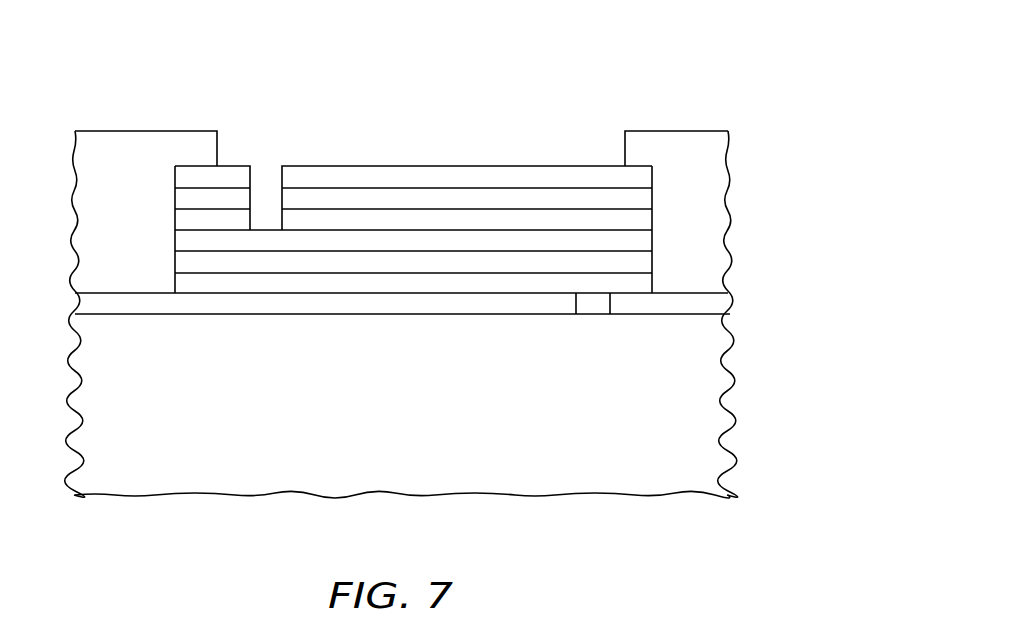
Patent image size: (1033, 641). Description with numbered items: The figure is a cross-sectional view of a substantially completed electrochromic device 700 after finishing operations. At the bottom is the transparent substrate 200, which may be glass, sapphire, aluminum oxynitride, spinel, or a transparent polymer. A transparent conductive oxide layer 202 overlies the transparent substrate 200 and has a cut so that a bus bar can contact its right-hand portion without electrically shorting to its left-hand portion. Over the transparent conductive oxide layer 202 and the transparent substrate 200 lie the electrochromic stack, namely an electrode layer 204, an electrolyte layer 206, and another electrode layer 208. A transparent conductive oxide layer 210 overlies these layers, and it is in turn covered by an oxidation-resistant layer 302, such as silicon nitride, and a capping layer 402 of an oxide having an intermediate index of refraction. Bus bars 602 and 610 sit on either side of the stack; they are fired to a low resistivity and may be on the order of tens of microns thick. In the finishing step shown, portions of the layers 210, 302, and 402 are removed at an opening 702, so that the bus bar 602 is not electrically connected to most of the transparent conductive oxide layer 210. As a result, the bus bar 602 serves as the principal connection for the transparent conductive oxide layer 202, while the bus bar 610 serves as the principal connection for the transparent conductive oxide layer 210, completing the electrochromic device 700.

The transparent substrate 200 is at (663, 465).
The transparent conductive oxide layer 202 is at (97, 302).
The electrode layer 204 is at (193, 285).
The electrolyte layer 206 is at (270, 262).
The electrode layer 208 is at (393, 243).
The transparent conductive oxide layer 210 is at (305, 220).
The oxidation-resistant layer 302 is at (407, 198).
The capping layer 402 is at (530, 174).
The bus bar 602 is at (144, 205).
The bus bar 610 is at (707, 205).
The electrochromic device 700 is at (618, 42).
The opening 702 is at (272, 161).